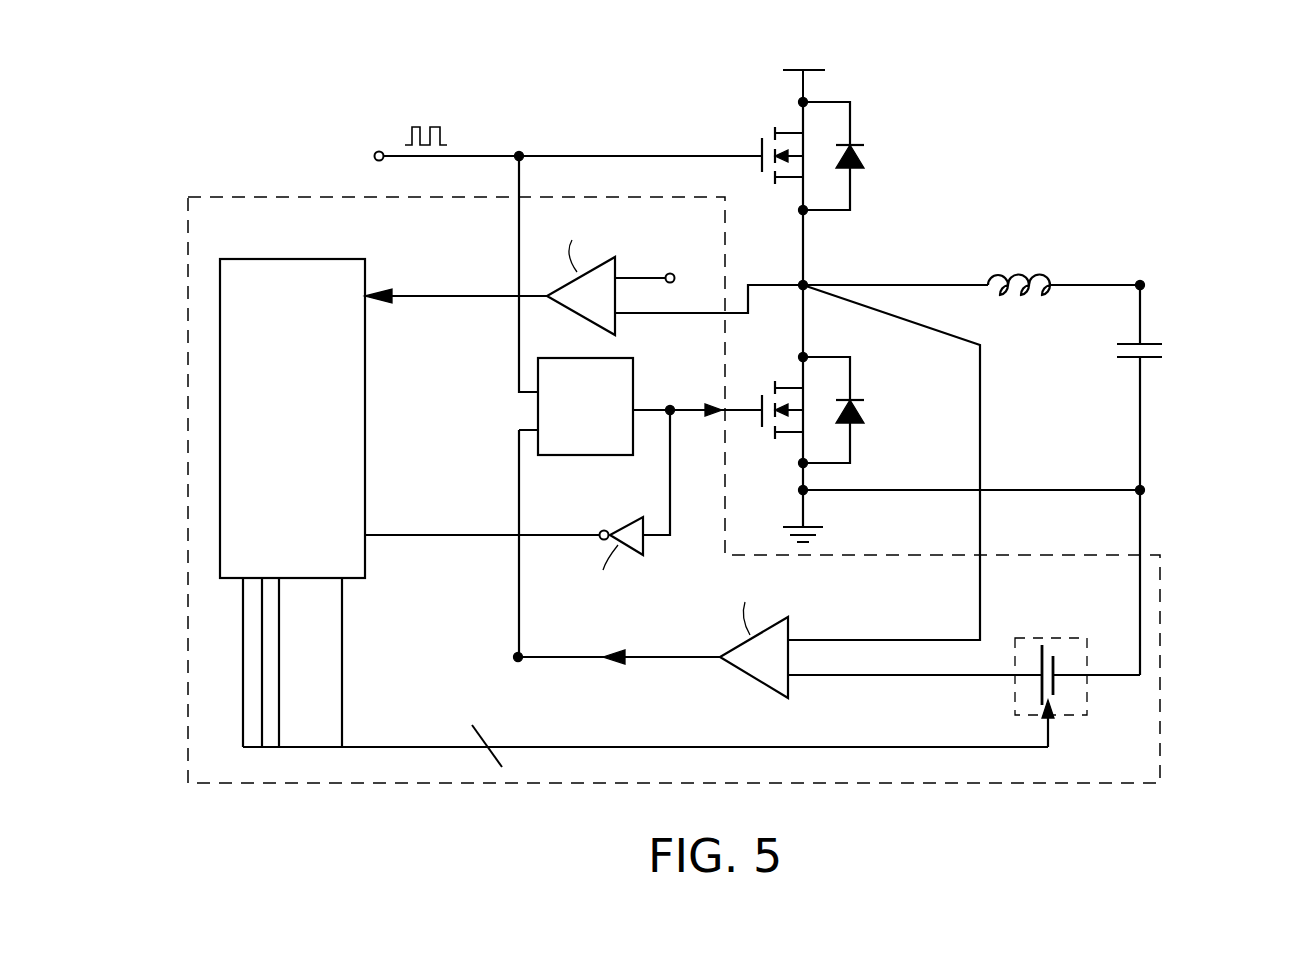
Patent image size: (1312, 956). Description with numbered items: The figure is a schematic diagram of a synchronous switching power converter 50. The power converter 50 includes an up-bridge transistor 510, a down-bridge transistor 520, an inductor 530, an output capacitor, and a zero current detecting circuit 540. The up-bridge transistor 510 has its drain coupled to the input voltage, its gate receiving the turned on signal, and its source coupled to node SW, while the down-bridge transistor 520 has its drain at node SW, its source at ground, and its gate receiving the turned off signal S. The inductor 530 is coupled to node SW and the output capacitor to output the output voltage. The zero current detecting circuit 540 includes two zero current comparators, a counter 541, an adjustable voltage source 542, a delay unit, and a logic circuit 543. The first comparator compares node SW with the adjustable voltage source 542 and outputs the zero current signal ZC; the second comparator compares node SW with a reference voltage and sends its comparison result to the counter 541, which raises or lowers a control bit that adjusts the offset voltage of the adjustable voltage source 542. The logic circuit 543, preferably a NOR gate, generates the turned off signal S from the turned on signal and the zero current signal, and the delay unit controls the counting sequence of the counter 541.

The synchronous switching power converter 50 is at (1172, 132).
The up-bridge transistor 510 is at (868, 155).
The down-bridge transistor 520 is at (868, 408).
The inductor 530 is at (1017, 268).
The zero current detecting circuit 540 is at (1162, 667).
The counter 541 is at (277, 259).
The adjustable voltage source 542 is at (1050, 637).
The logic circuit 543 is at (587, 455).